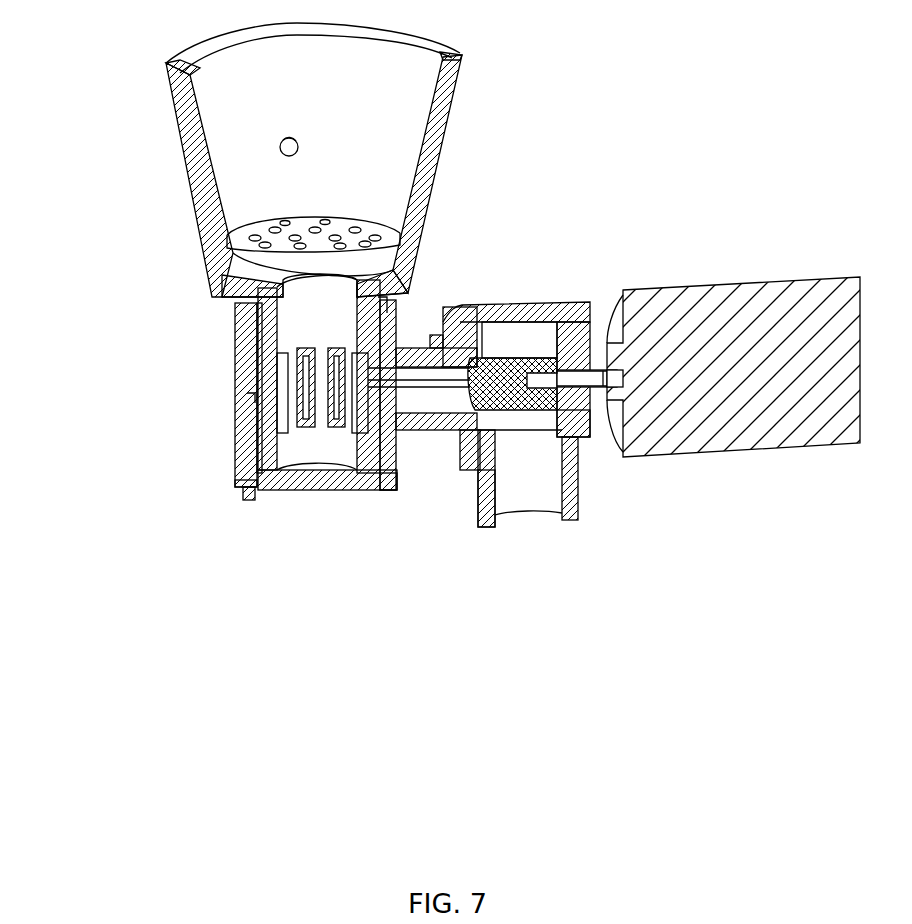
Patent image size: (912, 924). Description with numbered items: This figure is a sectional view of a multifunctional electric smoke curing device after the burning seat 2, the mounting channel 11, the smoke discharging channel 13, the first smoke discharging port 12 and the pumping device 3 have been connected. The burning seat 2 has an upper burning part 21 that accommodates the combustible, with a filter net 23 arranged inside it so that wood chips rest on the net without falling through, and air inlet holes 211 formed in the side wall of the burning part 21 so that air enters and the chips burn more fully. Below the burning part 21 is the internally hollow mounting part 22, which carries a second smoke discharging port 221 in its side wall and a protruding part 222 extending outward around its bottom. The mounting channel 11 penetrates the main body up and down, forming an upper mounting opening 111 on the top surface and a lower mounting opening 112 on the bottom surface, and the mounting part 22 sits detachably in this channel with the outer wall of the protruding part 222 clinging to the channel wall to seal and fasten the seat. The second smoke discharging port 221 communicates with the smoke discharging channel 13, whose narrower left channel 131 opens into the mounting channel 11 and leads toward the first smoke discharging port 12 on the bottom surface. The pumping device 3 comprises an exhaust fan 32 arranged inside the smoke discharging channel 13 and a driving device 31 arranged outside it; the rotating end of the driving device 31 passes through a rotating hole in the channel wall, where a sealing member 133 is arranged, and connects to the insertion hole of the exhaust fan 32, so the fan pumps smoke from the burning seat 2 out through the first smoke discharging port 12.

The burning seat 2 is at (98, 258).
The burning part 21 is at (195, 185).
The air inlet hole 211 is at (280, 143).
The mounting part 22 is at (313, 323).
The second smoke discharging port 221 is at (308, 397).
The protruding part 222 is at (258, 497).
The filter net 23 is at (307, 213).
The mounting channel 11 is at (98, 433).
The upper mounting opening 111 is at (237, 313).
The lower mounting opening 112 is at (243, 492).
The first smoke discharging port 12 is at (505, 540).
The smoke discharging channel 13 is at (470, 283).
The left channel 131 is at (415, 397).
The sealing member 133 is at (590, 392).
The pumping device 3 is at (695, 205).
The driving device 31 is at (633, 330).
The exhaust fan 32 is at (533, 337).